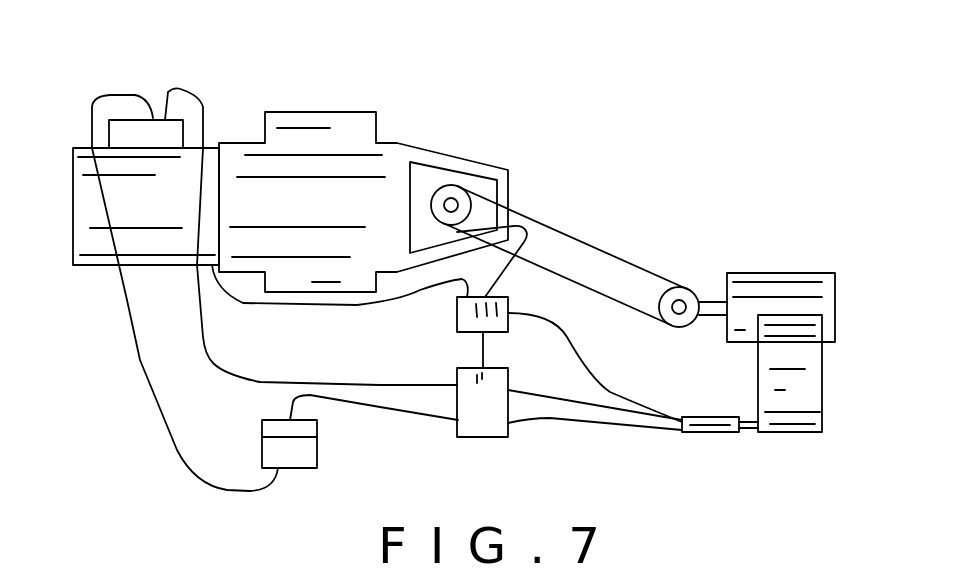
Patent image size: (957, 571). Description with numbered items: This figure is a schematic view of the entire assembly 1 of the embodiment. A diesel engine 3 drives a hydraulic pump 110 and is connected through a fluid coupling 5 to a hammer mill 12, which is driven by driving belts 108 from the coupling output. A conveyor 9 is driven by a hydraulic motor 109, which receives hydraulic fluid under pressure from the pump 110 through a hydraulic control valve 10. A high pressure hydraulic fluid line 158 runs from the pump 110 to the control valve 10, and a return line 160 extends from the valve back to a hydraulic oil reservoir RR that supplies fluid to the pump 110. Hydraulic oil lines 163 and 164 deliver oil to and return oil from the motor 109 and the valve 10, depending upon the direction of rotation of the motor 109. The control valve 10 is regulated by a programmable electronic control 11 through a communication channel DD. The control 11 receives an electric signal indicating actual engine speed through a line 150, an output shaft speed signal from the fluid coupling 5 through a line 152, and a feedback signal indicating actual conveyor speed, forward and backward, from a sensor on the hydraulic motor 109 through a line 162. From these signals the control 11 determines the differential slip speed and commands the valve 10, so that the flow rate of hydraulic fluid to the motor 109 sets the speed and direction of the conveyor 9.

The entire assembly 1 is at (604, 208).
The diesel engine 3 is at (83, 257).
The fluid coupling 5 is at (303, 112).
The conveyor 9 is at (803, 390).
The hydraulic control valve 10 is at (472, 387).
The programmable electronic control 11 is at (468, 311).
The hammer mill 12 is at (783, 272).
The driving belts 108 is at (612, 255).
The hydraulic motor 109 is at (725, 432).
The hydraulic pump 110 is at (153, 128).
The electronic input signal line 150 is at (372, 304).
The electronic input signal line 152 is at (505, 272).
The high pressure hydraulic fluid line 158 is at (212, 362).
The return line 160 is at (140, 360).
The feedback signal line 162 is at (593, 377).
The hydraulic oil line 163 is at (562, 397).
The hydraulic oil line 164 is at (543, 422).
The communication channel DD is at (505, 346).
The hydraulic oil reservoir RR is at (303, 468).